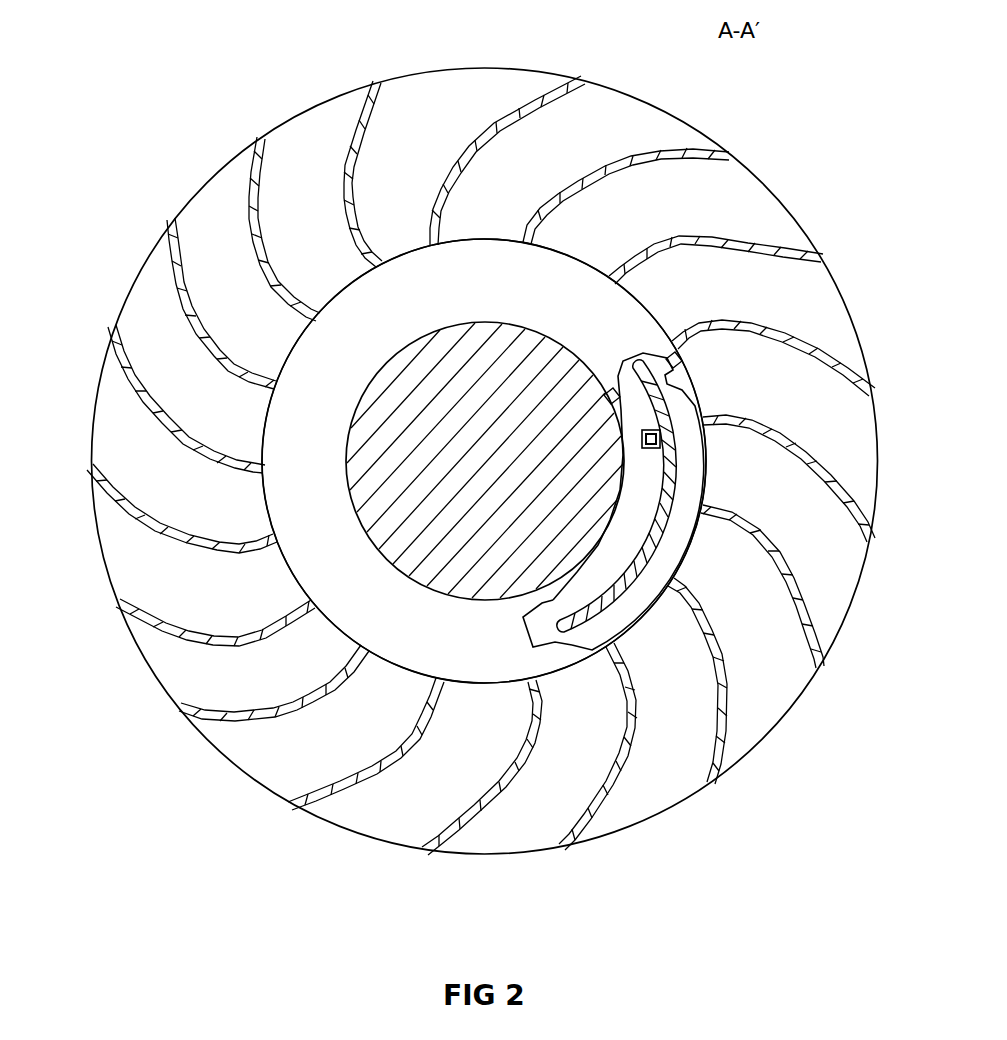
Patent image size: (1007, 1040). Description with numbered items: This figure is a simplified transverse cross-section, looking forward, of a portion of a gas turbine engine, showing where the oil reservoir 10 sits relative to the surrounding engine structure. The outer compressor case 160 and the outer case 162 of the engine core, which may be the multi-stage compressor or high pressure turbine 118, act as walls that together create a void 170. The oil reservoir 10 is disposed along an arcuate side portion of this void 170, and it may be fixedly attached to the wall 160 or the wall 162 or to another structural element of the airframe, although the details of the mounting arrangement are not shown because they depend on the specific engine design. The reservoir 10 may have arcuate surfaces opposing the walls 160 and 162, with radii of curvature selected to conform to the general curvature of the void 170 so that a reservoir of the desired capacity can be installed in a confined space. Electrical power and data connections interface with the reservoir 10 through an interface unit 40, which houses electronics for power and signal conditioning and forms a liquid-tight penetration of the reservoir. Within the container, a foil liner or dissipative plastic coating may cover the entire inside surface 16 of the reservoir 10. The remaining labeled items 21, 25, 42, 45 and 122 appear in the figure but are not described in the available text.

The oil reservoir 10 is at (540, 603).
The inside surface 16 is at (586, 620).
The slot 21 is at (600, 592).
The sensor 25 is at (661, 446).
The interface unit 40 is at (680, 362).
The fastening element 42 is at (658, 355).
The fastening element 45 is at (611, 392).
The multi-stage compressor or high pressure turbine 118 is at (397, 543).
The impeller outer rim 122 is at (237, 770).
The outer compressor case 160 is at (267, 428).
The outer case of the engine core 162 is at (470, 676).
The void 170 is at (327, 495).